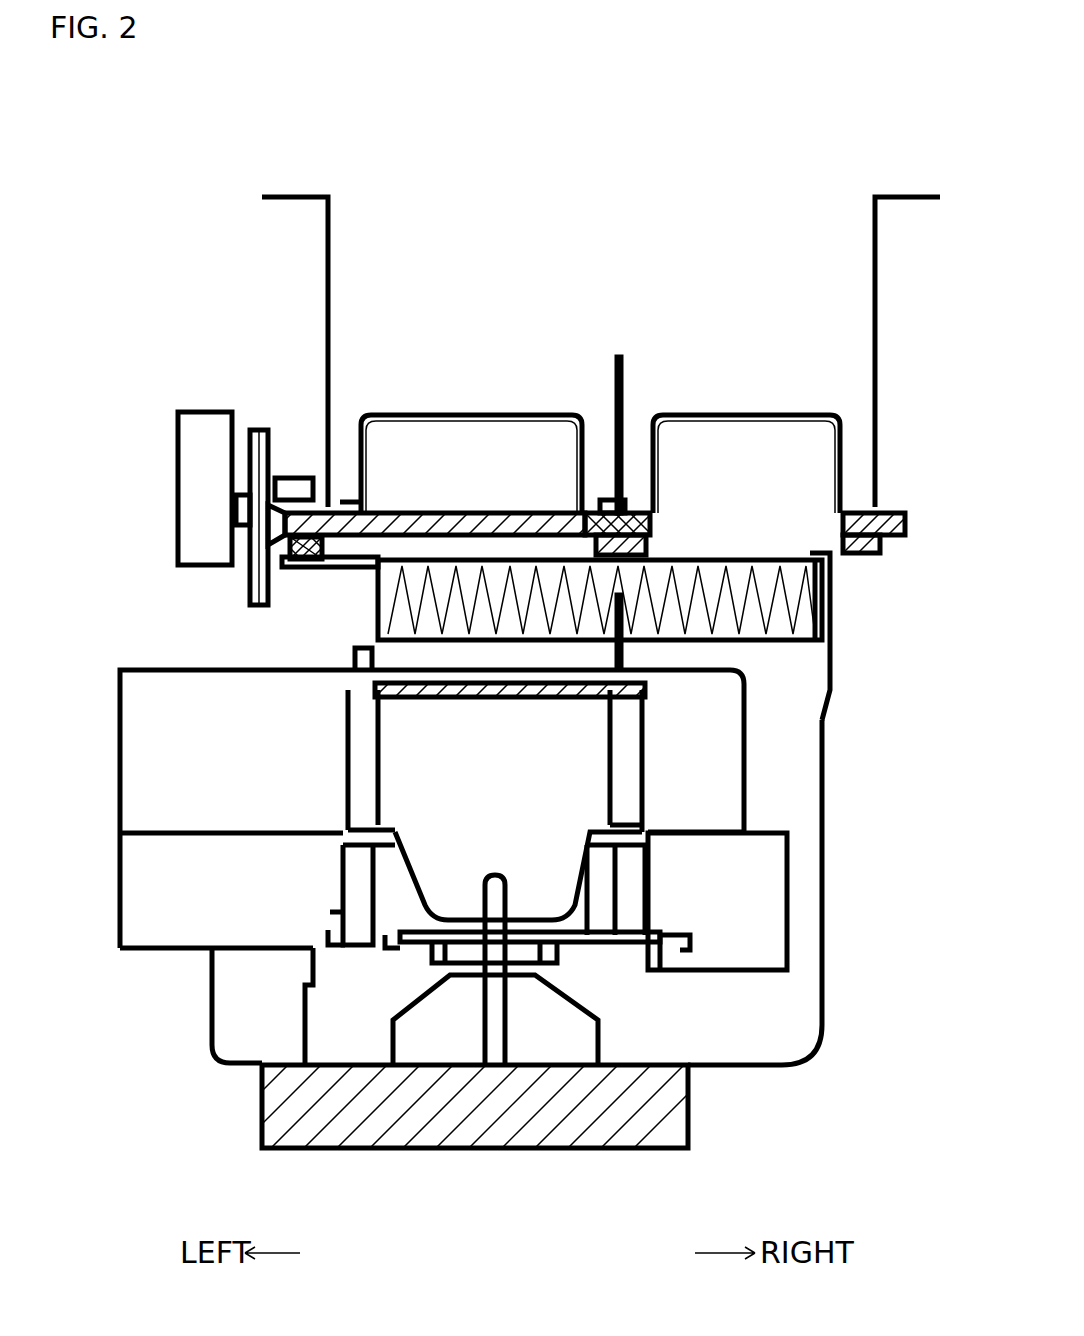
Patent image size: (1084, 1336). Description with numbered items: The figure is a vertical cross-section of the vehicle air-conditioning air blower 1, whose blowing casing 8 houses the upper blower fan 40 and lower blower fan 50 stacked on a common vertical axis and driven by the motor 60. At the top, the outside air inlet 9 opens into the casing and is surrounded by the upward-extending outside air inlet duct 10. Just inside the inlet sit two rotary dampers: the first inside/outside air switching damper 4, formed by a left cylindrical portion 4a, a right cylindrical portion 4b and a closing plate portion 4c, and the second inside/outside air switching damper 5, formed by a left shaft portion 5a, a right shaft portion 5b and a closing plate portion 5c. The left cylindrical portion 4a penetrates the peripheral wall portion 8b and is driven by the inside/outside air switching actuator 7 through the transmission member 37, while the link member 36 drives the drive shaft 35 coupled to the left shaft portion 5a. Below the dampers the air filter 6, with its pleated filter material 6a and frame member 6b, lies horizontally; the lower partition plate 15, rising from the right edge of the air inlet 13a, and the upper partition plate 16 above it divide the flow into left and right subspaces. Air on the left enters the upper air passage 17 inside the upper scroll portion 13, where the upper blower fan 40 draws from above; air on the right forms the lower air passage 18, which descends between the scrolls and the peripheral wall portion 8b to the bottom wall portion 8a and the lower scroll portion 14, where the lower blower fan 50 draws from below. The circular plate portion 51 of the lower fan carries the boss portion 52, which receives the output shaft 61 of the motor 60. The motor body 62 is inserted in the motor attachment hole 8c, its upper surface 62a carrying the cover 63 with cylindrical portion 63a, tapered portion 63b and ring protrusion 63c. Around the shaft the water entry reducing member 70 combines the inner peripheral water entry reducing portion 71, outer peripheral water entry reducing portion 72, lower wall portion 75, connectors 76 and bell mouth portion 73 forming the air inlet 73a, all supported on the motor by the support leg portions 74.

The vehicle air-conditioning air blower 1 is at (236, 297).
The first inside/outside air switching damper 4 is at (462, 406).
The left cylindrical portion 4a is at (345, 505).
The right cylindrical portion 4b is at (598, 510).
The closing plate portion 4c is at (512, 412).
The second inside/outside air switching damper 5 is at (745, 406).
The left shaft portion 5a is at (642, 510).
The right shaft portion 5b is at (893, 513).
The closing plate portion 5c is at (800, 412).
The air filter 6 is at (372, 587).
The filter material 6a is at (790, 602).
The frame member 6b is at (832, 587).
The inside/outside air switching actuator 7 is at (178, 497).
The blowing casing 8 is at (828, 840).
The bottom wall portion 8a is at (690, 1072).
The peripheral wall portion 8b is at (832, 792).
The motor attachment hole 8c is at (686, 1082).
The outside air inlet 9 is at (545, 430).
The outside air inlet duct 10 is at (878, 310).
The upper scroll portion 13 is at (748, 737).
The air inlet 13a is at (358, 654).
The lower scroll portion 14 is at (790, 887).
The lower partition plate 15 is at (625, 652).
The upper partition plate 16 is at (622, 362).
The upper air passage 17 is at (712, 772).
The lower air passage 18 is at (812, 697).
The drive shaft 35 is at (420, 510).
The link member 36 is at (250, 582).
The transmission member 37 is at (298, 478).
The upper blower fan 40 is at (342, 760).
The lower blower fan 50 is at (338, 860).
The circular plate portion 51 is at (440, 875).
The boss portion 52 is at (335, 916).
The motor 60 is at (258, 1107).
The output shaft 61 is at (598, 1032).
The body 62 is at (358, 1150).
The upper surface 62a is at (390, 1065).
The cover 63 is at (595, 1000).
The cylindrical portion 63a is at (598, 1062).
The tapered portion 63b is at (398, 1010).
The protrusion 63c is at (445, 992).
The water entry reducing member 70 is at (585, 937).
The inner peripheral water entry reducing portion 71 is at (518, 927).
The outer peripheral water entry reducing portion 72 is at (402, 935).
The bell mouth portion 73 is at (650, 962).
The air inlet 73a is at (355, 945).
The support leg portions 74 is at (305, 1022).
The lower wall portion 75 is at (520, 977).
The connector 76 is at (385, 940).